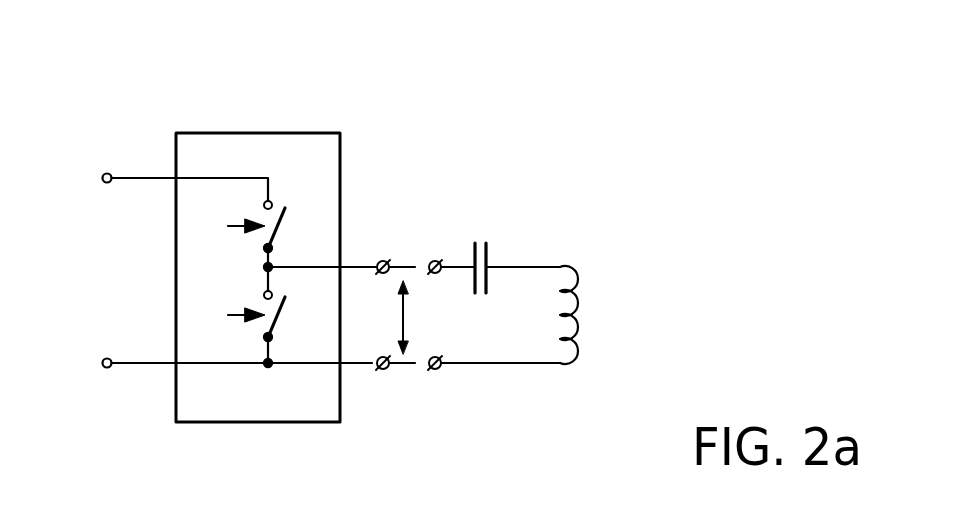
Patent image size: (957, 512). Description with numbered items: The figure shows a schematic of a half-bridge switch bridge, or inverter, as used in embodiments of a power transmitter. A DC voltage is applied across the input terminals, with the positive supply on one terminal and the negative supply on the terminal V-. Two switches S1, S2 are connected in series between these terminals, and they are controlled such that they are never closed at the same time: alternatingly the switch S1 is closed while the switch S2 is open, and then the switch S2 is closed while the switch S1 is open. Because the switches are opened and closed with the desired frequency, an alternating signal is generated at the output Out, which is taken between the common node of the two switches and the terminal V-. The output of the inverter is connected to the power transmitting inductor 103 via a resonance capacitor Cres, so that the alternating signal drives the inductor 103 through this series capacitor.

The power transmitting inductor 103 is at (577, 305).
The switch S1 is at (280, 228).
The switch S2 is at (277, 315).
The resonance capacitor Cres is at (483, 242).
The output Out is at (422, 317).
The negative input terminal V- is at (215, 362).